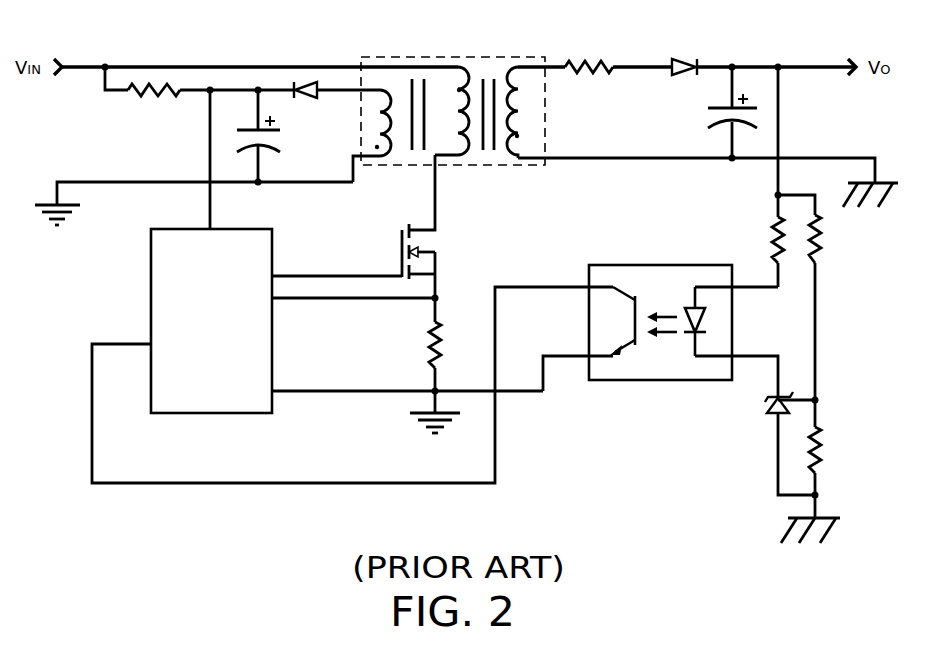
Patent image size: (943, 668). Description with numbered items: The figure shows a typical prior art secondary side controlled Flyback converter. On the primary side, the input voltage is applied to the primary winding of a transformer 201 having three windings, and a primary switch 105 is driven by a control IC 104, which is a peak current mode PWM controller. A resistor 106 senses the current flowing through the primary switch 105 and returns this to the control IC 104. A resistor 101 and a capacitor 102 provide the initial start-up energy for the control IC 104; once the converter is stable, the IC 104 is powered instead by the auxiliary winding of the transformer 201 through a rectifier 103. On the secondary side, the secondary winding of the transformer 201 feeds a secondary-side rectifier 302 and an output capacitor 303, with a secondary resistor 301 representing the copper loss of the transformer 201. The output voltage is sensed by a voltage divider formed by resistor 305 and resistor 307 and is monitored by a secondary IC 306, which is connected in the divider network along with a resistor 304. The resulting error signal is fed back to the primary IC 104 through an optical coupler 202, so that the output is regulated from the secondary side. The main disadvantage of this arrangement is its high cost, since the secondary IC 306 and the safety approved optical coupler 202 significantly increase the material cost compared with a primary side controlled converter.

The resistor 101 is at (152, 100).
The capacitor 102 is at (265, 148).
The rectifier 103 is at (311, 99).
The control IC 104 is at (228, 338).
The primary switch 105 is at (401, 247).
The resistor 106 is at (429, 343).
The transformer 201 is at (455, 58).
The optical coupler 202 is at (661, 265).
The secondary resistor 301 is at (589, 60).
The secondary-side rectifier 302 is at (681, 58).
The output capacitor 303 is at (720, 120).
The bias resistor 304 is at (772, 238).
The voltage divider resistor 305 is at (819, 238).
The secondary IC 306 is at (766, 403).
The voltage divider resistor 307 is at (822, 448).